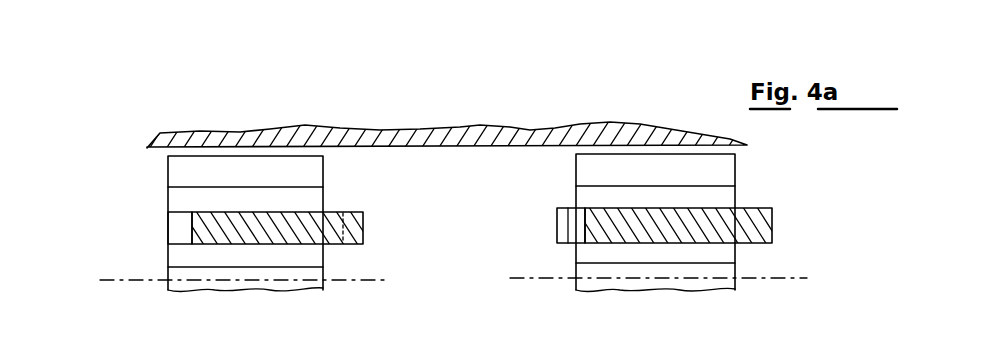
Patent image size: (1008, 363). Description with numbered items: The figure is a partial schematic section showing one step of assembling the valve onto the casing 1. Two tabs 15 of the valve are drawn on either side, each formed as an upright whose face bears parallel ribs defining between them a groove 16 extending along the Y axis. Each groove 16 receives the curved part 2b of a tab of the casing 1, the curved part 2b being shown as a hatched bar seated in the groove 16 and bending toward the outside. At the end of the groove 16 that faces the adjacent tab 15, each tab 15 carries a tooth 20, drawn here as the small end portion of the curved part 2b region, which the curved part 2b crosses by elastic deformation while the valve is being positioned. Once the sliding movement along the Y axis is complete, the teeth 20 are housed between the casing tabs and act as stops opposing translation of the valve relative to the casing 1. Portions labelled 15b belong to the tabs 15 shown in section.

The casing 1 is at (475, 122).
The tab 15 is at (292, 273).
The roller segment 15b is at (258, 198).
The curved part 2b is at (200, 229).
The groove 16 is at (180, 222).
The tooth 20 is at (340, 212).
The Y axis Y is at (795, 277).